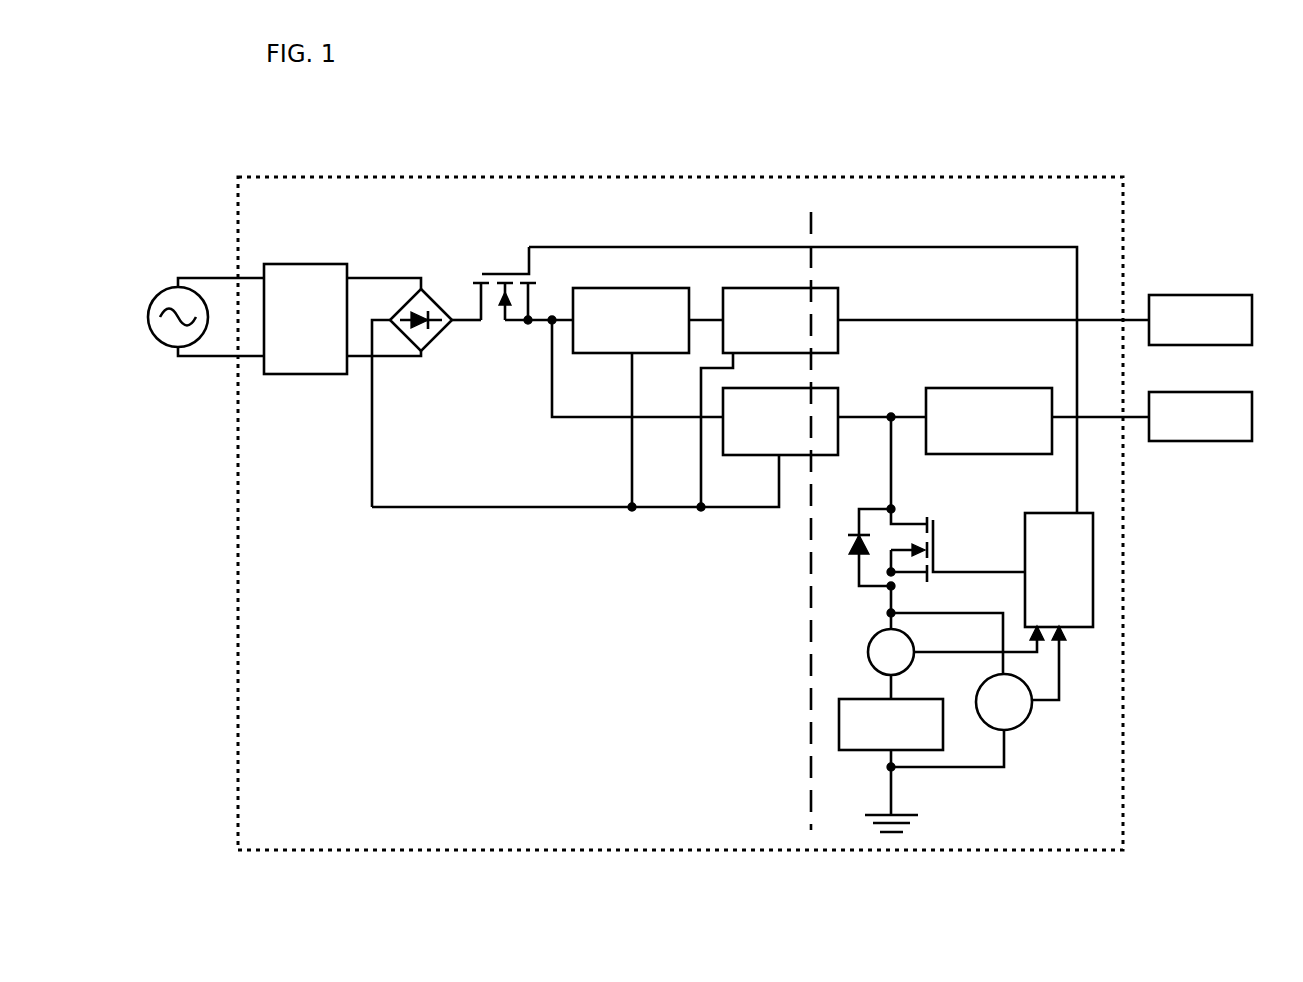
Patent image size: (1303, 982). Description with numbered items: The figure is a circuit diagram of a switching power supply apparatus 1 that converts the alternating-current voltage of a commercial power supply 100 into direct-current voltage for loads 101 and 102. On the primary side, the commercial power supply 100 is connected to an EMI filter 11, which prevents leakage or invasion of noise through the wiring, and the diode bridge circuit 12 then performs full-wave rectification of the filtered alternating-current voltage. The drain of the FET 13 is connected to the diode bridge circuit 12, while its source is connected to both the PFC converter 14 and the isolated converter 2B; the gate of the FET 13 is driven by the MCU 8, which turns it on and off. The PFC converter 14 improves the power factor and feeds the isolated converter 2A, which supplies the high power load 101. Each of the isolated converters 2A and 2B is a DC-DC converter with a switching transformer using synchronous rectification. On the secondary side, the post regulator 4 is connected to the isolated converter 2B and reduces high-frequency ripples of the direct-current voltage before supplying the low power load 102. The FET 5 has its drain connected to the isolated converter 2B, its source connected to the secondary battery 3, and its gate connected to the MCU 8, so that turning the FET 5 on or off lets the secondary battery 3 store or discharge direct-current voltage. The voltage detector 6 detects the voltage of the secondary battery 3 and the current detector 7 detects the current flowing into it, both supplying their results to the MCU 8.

The switching power supply apparatus 1 is at (258, 177).
The commercial power supply 100 is at (160, 293).
The EMI filter 11 is at (283, 264).
The diode bridge circuit 12 is at (432, 297).
The FET 13 is at (499, 336).
The PFC converter 14 is at (689, 290).
The isolated converter 2A is at (838, 300).
The isolated converter 2B is at (838, 394).
The post regulator 4 is at (1017, 388).
The load 101 is at (1252, 297).
The load 102 is at (1252, 395).
The FET 5 is at (945, 508).
The MCU 8 is at (1036, 513).
The current detector 7 is at (913, 665).
The voltage detector 6 is at (1027, 722).
The secondary battery 3 is at (851, 750).